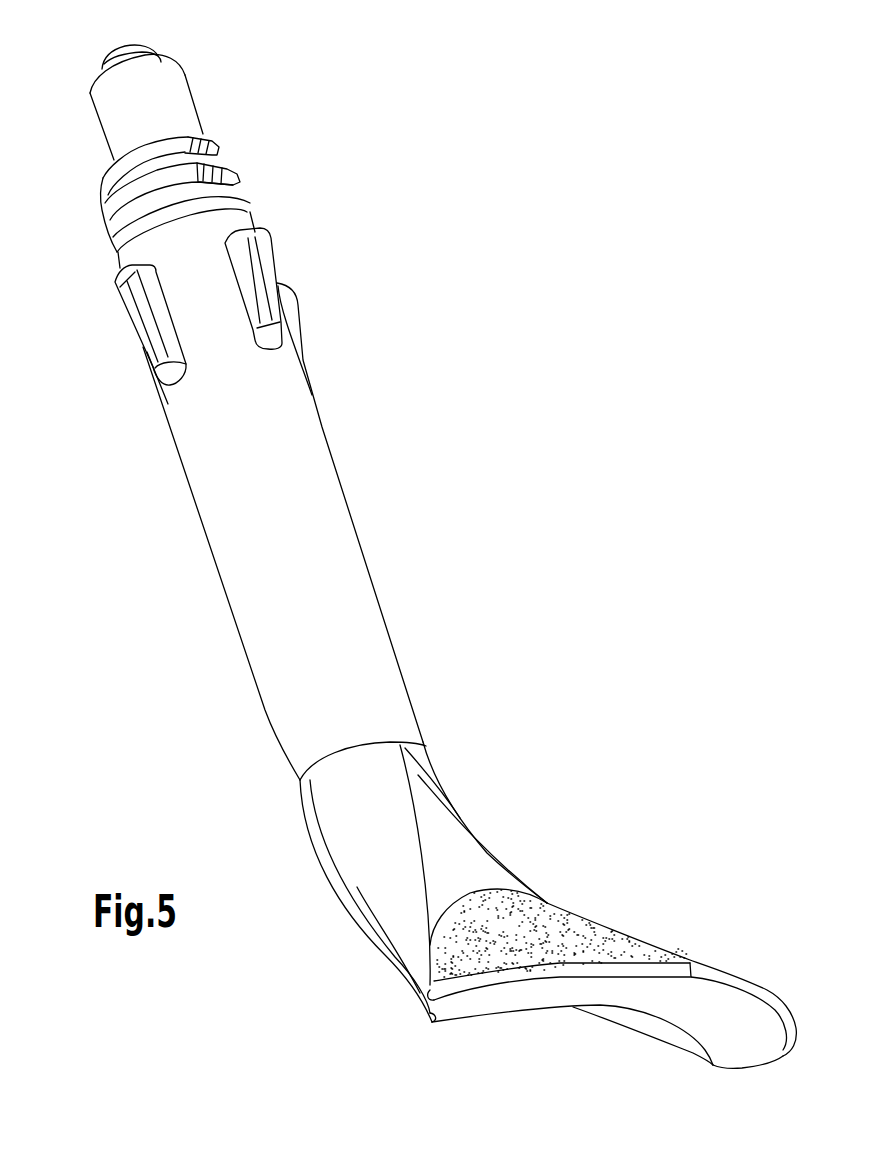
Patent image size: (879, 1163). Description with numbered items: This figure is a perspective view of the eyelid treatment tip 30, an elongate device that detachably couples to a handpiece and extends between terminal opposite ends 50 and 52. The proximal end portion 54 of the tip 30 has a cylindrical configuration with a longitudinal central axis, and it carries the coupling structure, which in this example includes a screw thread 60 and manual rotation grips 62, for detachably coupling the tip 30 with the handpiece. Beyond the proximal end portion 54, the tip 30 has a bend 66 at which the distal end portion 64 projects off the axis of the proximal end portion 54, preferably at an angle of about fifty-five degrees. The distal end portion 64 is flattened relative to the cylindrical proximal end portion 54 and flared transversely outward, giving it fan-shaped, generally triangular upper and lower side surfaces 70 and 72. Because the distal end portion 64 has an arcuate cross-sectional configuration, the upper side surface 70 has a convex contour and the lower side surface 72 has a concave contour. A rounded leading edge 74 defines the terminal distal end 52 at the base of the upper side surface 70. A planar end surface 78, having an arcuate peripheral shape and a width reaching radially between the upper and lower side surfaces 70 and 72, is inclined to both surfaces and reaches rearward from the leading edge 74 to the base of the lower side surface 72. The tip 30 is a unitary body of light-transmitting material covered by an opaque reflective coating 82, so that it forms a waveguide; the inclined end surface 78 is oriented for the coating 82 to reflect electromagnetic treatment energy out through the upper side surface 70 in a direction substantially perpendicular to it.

The tip 30 is at (158, 575).
The terminal proximal end 50 is at (122, 45).
The terminal distal end 52 is at (700, 975).
The proximal end portion 54 is at (230, 480).
The screw thread 60 is at (105, 211).
The manual rotation grips 62 is at (260, 226).
The distal end portion 64 is at (402, 985).
The bend 66 is at (308, 833).
The upper side surface 70 is at (580, 940).
The lower side surface 72 is at (677, 1030).
The rounded leading edge 74 is at (770, 1003).
The planar end surface 78 is at (740, 1033).
The opaque reflective coating 82 is at (323, 487).